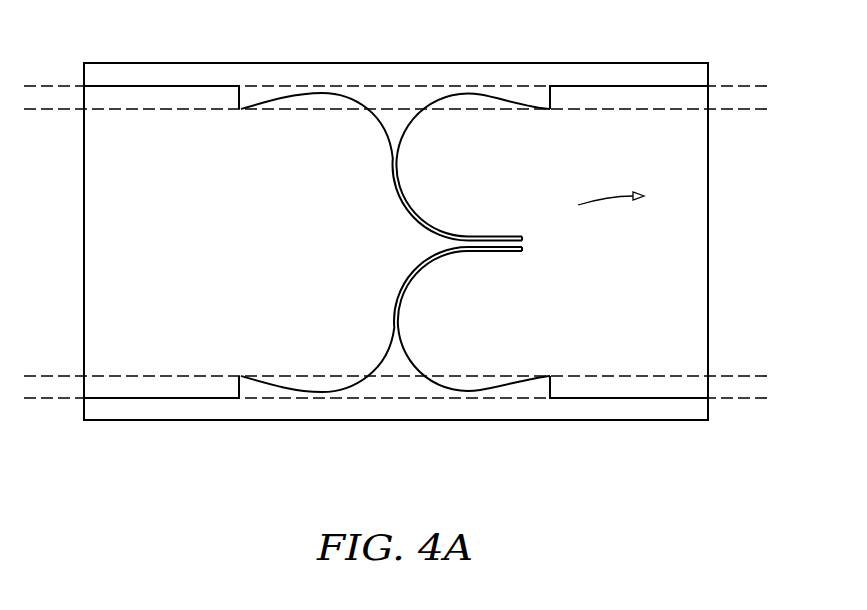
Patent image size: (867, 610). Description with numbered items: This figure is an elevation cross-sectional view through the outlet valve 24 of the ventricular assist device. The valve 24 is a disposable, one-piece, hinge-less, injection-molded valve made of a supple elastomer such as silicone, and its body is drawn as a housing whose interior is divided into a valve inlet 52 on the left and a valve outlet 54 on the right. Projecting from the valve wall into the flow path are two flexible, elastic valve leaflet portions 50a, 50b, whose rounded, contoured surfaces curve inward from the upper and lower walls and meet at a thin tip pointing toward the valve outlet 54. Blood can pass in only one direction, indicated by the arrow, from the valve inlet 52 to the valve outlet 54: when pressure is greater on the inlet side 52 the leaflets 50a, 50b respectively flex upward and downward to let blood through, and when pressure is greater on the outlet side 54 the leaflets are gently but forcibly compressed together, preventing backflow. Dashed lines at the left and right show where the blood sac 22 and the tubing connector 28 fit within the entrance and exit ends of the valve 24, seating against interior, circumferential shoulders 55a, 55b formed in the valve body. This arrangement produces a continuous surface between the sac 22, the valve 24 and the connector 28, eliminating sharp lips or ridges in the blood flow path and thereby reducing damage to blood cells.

The blood sac 22 is at (55, 103).
The valve 24 is at (365, 433).
The tubing connector 28 is at (732, 90).
The valve leaflet portion 50a is at (462, 234).
The valve leaflet portion 50b is at (463, 252).
The valve inlet 52 is at (194, 273).
The valve outlet 54 is at (651, 273).
The interior circumferential shoulder 55a is at (244, 115).
The interior circumferential shoulder 55b is at (548, 115).